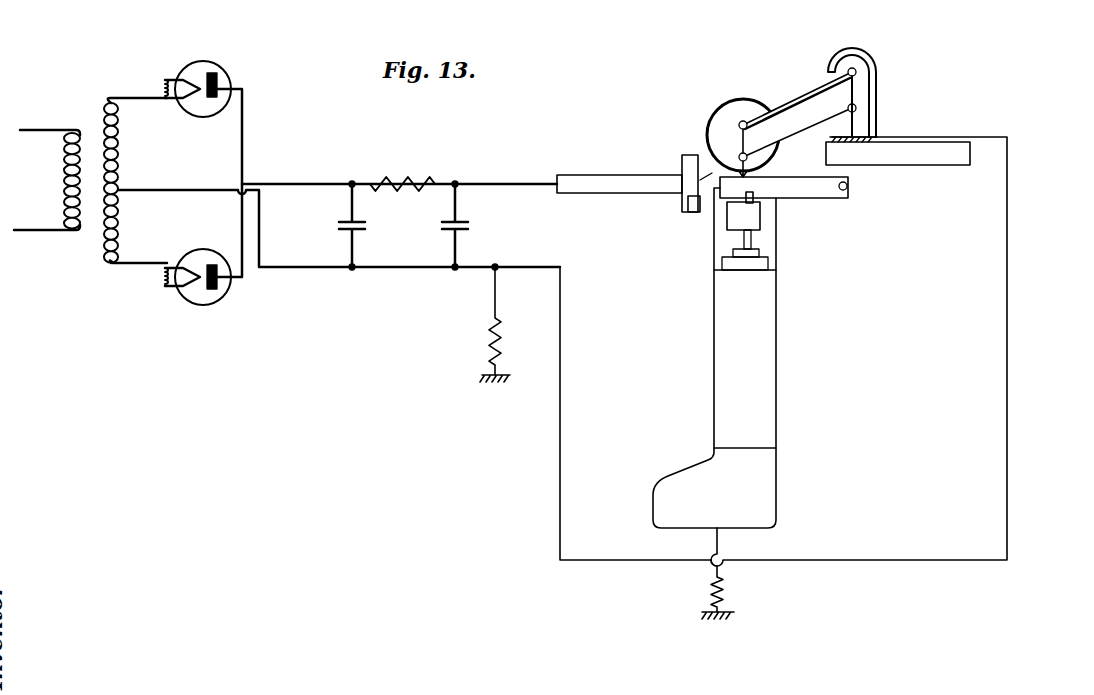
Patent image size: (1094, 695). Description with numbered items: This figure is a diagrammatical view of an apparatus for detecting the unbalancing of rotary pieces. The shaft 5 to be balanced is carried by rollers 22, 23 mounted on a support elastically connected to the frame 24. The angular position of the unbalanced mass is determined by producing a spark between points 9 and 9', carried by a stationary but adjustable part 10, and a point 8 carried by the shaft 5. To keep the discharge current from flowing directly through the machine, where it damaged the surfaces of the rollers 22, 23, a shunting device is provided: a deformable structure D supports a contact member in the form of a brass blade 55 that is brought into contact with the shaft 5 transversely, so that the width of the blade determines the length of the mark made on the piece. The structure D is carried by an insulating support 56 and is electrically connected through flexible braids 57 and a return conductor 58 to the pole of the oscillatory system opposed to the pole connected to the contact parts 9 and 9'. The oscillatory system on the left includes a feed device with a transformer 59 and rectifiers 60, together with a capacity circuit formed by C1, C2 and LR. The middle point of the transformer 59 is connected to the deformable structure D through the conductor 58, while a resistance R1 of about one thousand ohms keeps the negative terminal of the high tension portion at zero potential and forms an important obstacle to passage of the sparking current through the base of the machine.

The transformer 59 is at (85, 172).
The rectifiers 60 is at (212, 65).
The capacity circuit inductance-resistance LR is at (402, 167).
The capacity C1 is at (370, 225).
The capacity C2 is at (472, 225).
The resistance R1 is at (477, 323).
The adjustable part 10 is at (577, 180).
The point 9 is at (683, 163).
The point 9' is at (674, 213).
The point 8 is at (708, 179).
The shaft 5 is at (820, 190).
The brass blade 55 is at (748, 172).
The deformable structure D is at (800, 110).
The flexible braids 57 is at (870, 55).
The insulating support 56 is at (875, 130).
The frame 24 is at (756, 303).
The roller 22 is at (733, 210).
The roller 23 is at (757, 200).
The return conductor 58 is at (1007, 180).